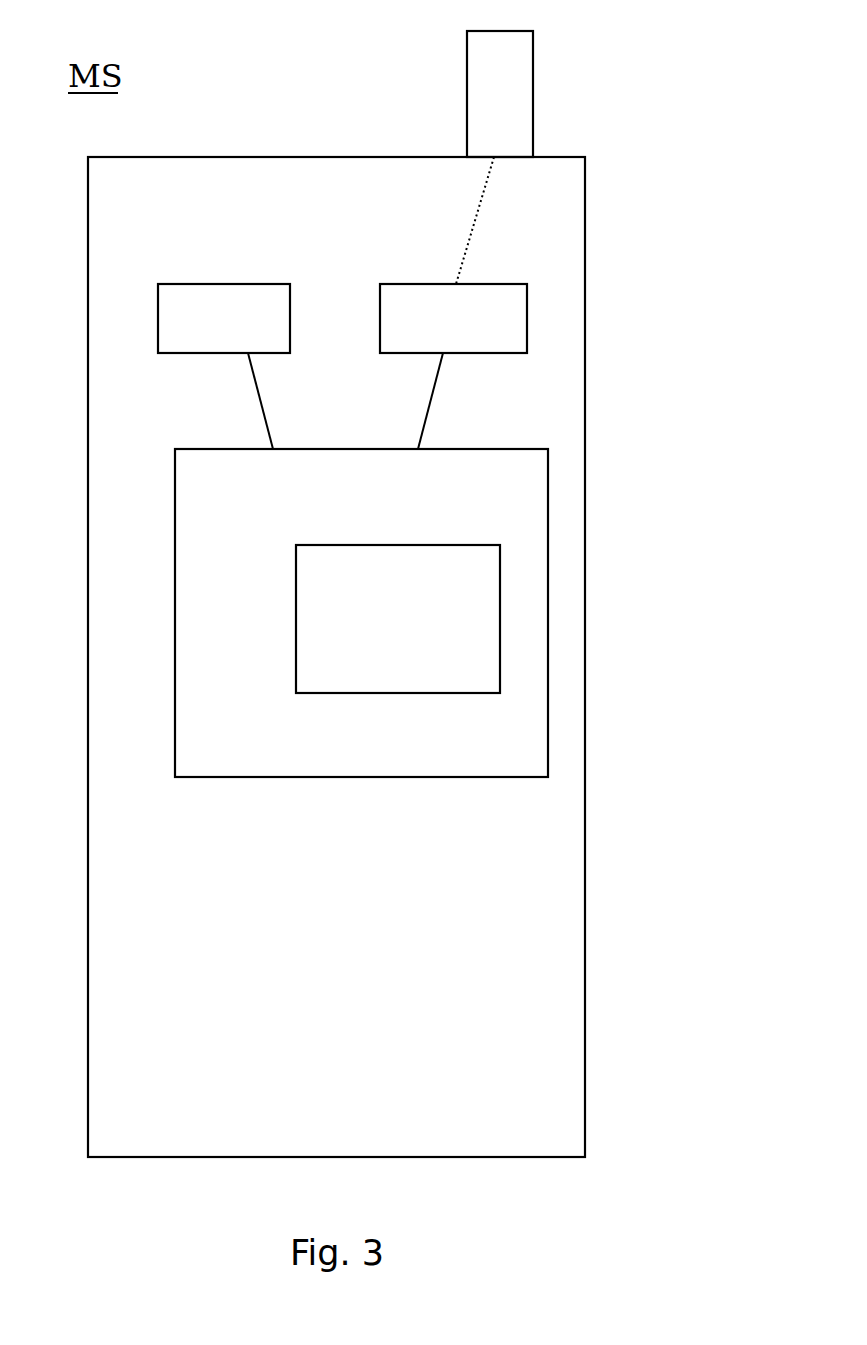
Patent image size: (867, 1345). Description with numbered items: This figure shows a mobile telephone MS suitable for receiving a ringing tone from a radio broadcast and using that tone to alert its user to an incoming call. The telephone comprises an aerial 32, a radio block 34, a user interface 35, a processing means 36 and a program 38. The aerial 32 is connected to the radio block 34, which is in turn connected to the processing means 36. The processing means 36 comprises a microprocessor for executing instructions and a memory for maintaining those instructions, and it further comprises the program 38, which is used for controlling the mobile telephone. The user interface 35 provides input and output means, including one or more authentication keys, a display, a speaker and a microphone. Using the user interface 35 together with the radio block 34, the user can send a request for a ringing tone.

The aerial 32 is at (533, 82).
The radio block 34 is at (453, 318).
The user interface 35 is at (224, 318).
The processing means 36 is at (361, 613).
The program 38 is at (398, 619).